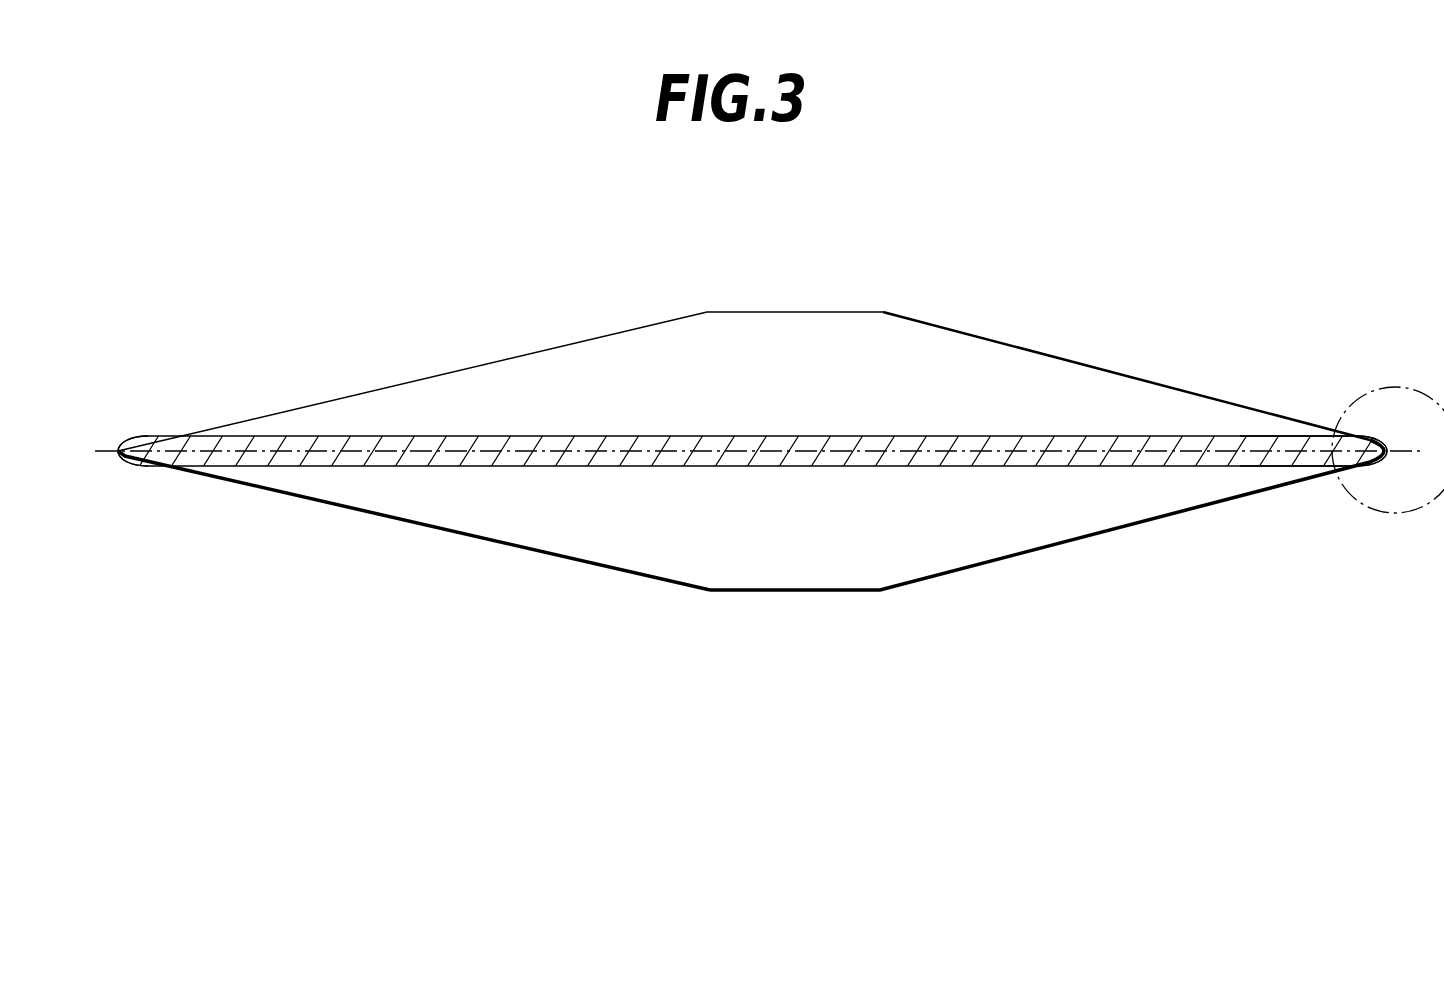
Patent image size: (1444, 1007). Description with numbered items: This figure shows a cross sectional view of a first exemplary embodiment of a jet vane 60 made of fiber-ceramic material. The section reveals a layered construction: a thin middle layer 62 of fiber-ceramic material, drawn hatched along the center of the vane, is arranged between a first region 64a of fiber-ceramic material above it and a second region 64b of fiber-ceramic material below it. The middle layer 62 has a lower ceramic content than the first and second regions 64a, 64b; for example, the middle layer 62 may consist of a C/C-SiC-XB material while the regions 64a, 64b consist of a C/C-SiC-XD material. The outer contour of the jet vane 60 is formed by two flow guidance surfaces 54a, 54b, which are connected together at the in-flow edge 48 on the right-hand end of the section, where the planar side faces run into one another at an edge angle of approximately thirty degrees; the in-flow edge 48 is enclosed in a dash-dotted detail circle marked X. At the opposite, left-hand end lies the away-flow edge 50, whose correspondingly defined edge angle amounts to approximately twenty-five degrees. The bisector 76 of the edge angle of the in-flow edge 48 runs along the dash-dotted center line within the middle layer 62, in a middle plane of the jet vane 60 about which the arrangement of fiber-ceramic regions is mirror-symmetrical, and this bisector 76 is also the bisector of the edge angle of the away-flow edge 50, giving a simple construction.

The jet vane 60 is at (521, 300).
The first region 64a is at (353, 415).
The flow guidance surface 54a is at (1108, 366).
The flow guidance surface 54b is at (1090, 540).
The second region 64b is at (350, 490).
The middle layer 62 is at (220, 468).
The away-flow edge 50 is at (122, 449).
The bisector 76 is at (1268, 470).
The in-flow edge 48 is at (1392, 455).
The detail region X is at (1393, 387).